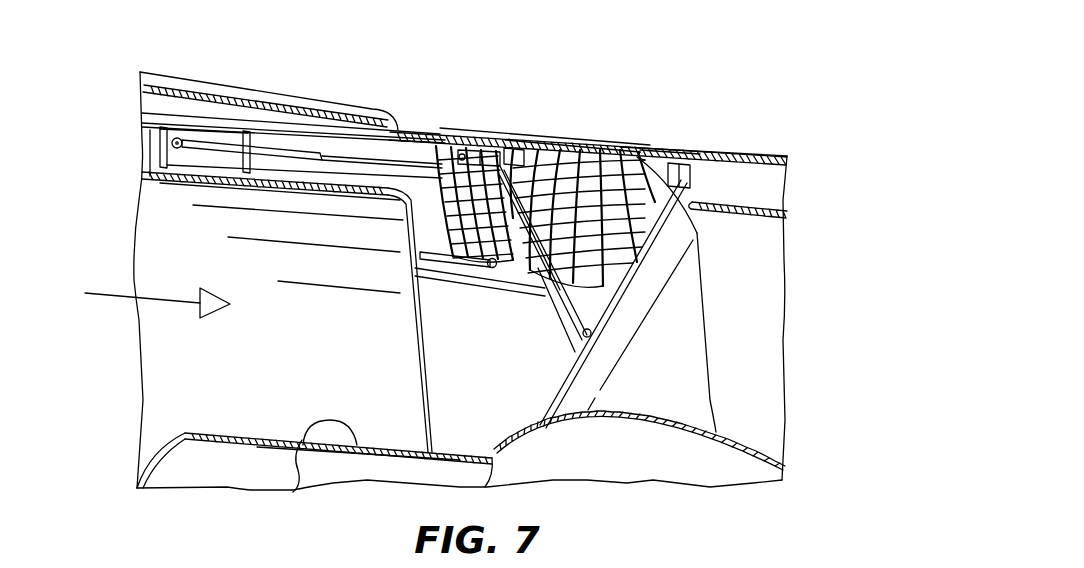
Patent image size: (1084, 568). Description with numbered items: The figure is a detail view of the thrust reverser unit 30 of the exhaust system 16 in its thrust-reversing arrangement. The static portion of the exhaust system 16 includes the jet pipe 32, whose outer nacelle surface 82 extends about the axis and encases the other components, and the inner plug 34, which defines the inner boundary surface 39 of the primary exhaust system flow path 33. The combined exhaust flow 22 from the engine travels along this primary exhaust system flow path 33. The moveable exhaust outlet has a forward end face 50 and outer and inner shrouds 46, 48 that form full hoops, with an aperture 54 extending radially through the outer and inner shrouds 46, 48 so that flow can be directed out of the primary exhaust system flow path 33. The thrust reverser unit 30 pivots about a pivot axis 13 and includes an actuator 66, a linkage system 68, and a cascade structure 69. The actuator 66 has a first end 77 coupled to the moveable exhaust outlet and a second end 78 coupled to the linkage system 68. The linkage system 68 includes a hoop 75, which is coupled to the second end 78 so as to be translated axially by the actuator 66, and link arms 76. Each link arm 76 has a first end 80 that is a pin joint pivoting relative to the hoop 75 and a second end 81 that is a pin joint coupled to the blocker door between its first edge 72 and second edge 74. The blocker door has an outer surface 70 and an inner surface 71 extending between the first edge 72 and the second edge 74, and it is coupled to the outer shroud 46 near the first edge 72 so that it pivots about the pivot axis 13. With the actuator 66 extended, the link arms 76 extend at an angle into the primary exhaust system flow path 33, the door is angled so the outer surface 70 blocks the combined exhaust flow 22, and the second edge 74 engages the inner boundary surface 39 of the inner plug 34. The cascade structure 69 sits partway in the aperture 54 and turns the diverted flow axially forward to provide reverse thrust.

The exhaust system 16 is at (72, 103).
The forward end face 50 is at (146, 146).
The first end 77 is at (177, 139).
The jet pipe 32 is at (237, 158).
The outer nacelle surface 82 is at (302, 98).
The actuator 66 is at (320, 124).
The cascade structure 69 is at (453, 124).
The hoop 75 is at (473, 137).
The first end 80 is at (508, 146).
The link arm 76 is at (570, 204).
The linkage system 68 is at (493, 66).
The thrust reverser unit 30 is at (619, 107).
The second end 78 is at (440, 143).
The first edge 72 is at (657, 155).
The pivot axis 13 is at (684, 158).
The outer shroud 46 is at (700, 154).
The inner shroud 48 is at (750, 204).
The combined exhaust flow 22 is at (114, 292).
The primary exhaust system flow path 33 is at (265, 278).
The aperture 54 is at (431, 222).
The inner plug 34 is at (225, 412).
The inner boundary surface 39 is at (297, 478).
The second end 81 is at (573, 340).
The second edge 74 is at (547, 423).
The outer surface 70 is at (635, 257).
The inner surface 71 is at (657, 339).